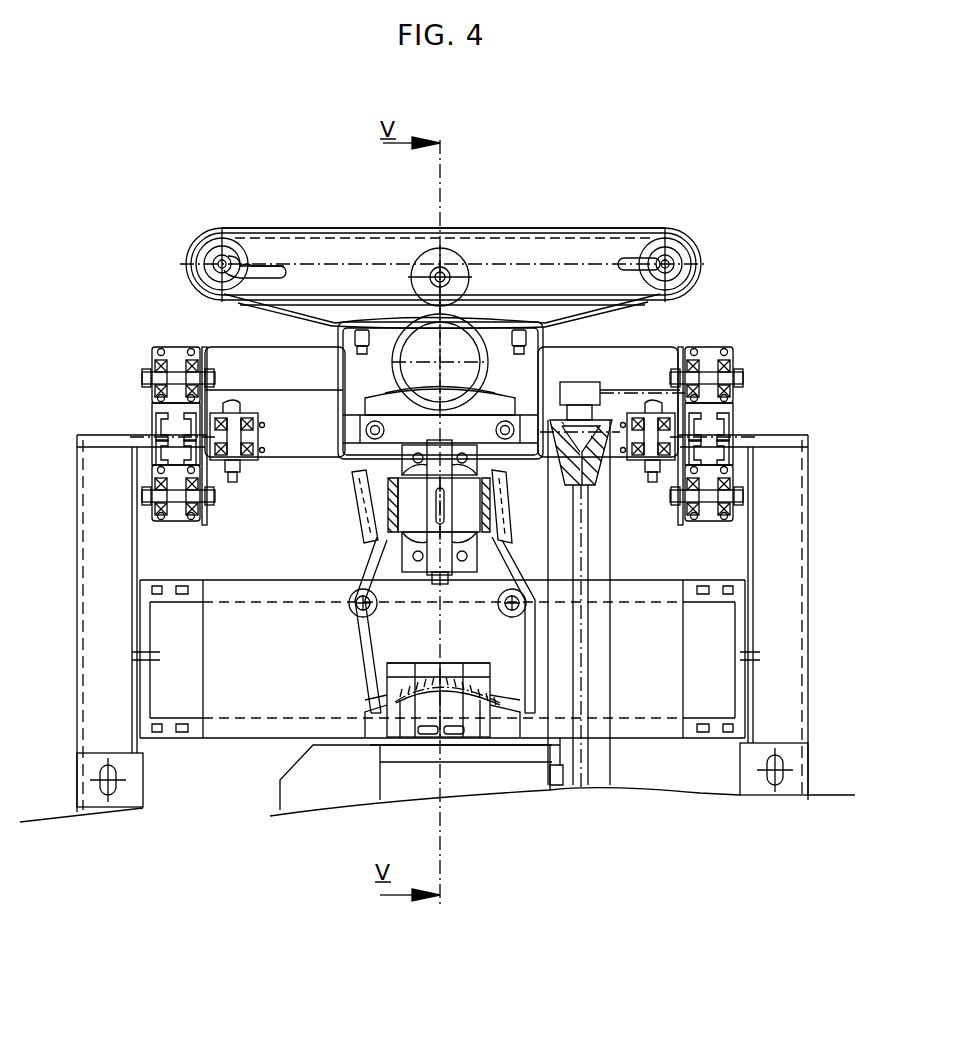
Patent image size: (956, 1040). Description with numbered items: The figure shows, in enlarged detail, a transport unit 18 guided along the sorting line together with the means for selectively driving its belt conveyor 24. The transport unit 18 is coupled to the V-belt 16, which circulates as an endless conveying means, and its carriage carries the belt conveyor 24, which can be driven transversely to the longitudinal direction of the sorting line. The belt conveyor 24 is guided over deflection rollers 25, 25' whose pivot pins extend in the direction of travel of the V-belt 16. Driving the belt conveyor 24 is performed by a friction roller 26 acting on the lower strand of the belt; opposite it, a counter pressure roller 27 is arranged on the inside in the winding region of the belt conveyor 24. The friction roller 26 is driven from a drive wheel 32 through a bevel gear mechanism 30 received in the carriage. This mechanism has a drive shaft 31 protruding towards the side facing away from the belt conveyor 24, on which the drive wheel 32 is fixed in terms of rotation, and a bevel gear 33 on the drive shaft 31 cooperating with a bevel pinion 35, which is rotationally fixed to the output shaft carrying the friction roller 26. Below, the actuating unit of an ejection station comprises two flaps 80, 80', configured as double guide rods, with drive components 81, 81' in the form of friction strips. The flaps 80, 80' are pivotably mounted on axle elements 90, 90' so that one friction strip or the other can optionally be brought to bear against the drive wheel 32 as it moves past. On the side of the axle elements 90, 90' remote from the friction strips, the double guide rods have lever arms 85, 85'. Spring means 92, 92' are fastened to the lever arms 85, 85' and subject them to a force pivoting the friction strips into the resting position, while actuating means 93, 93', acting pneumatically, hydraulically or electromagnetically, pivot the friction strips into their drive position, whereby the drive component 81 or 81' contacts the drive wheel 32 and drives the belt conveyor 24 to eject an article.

The V-belt 16 is at (598, 462).
The transport unit 18 is at (566, 222).
The belt conveyor 24 is at (482, 228).
The deflection roller 25 is at (685, 252).
The deflection roller 25' is at (215, 233).
The friction roller 26 is at (373, 352).
The counter pressure roller 27 is at (455, 272).
The bevel gear mechanism 30 is at (520, 378).
The drive shaft 31 is at (380, 542).
The drive wheel 32 is at (392, 506).
The bevel gear 33 is at (377, 385).
The bevel pinion 35 is at (405, 358).
The flap 80 is at (578, 625).
The flap 80' is at (332, 625).
The drive component 81 is at (518, 513).
The drive component 81' is at (330, 506).
The lever arm 85 is at (526, 696).
The lever arm 85' is at (387, 675).
The axle element 90 is at (485, 625).
The axle element 90' is at (393, 621).
The spring means 92 is at (453, 774).
The spring means 92' is at (395, 696).
The actuating means 93 is at (527, 767).
The actuating means 93' is at (356, 780).